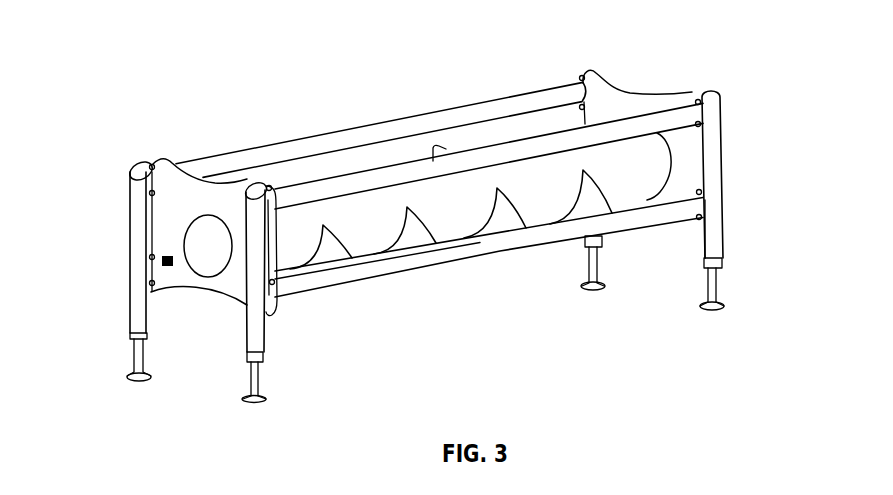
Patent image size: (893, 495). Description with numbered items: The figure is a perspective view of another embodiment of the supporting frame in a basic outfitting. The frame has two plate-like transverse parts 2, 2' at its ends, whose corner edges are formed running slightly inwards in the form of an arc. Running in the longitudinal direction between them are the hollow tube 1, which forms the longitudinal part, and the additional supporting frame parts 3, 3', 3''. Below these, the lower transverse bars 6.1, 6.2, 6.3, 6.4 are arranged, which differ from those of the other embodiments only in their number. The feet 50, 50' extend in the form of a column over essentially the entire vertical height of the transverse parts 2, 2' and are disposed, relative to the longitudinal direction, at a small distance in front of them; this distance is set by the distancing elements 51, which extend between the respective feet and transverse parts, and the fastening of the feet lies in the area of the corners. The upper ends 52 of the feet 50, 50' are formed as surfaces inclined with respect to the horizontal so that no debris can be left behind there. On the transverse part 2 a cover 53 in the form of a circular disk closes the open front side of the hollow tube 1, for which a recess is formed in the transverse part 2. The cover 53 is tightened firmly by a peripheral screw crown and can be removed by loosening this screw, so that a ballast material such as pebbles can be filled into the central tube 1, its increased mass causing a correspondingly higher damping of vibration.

The hollow tube 1 is at (625, 178).
The plate-like transverse part 2 is at (199, 194).
The plate-like transverse part 2' is at (637, 73).
The additional supporting frame part 3 is at (381, 102).
The additional supporting frame part 3' is at (489, 115).
The additional supporting frame part 3'' is at (489, 303).
The lower transverse bar 6.1 is at (332, 258).
The lower transverse bar 6.2 is at (413, 245).
The lower transverse bar 6.3 is at (505, 224).
The lower transverse bar 6.4 is at (578, 222).
The foot 50 is at (383, 282).
The foot 50' is at (752, 249).
The distancing element 51 is at (152, 166).
The upper end of foot 52 is at (133, 168).
The cover 53 is at (211, 257).